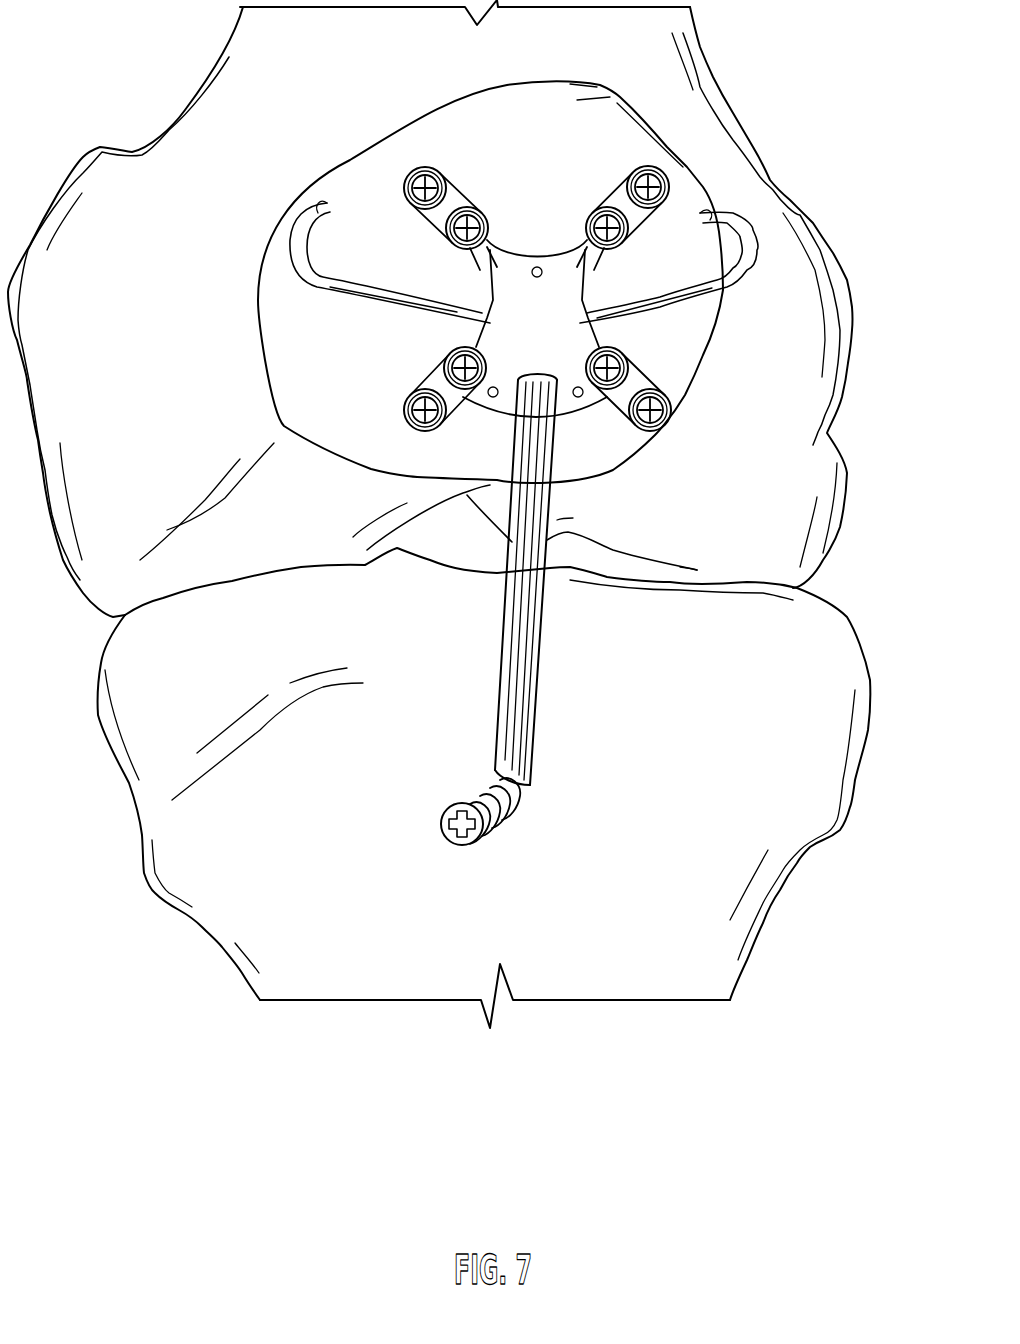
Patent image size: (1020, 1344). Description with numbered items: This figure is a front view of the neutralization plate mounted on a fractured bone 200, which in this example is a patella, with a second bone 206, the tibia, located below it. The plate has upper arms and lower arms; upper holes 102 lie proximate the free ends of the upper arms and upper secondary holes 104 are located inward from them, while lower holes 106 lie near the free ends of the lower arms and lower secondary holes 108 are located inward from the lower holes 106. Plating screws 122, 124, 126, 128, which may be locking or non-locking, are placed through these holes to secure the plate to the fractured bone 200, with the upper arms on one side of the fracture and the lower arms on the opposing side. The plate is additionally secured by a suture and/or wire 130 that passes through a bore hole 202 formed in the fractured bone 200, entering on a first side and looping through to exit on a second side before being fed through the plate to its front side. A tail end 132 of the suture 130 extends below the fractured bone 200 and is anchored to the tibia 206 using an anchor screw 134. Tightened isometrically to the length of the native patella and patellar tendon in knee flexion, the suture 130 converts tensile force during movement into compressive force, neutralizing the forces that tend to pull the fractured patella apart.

The upper holes 102 is at (403, 197).
The upper secondary holes 104 is at (455, 250).
The lower holes 106 is at (410, 395).
The lower secondary holes 108 is at (447, 350).
The plating screw 122 is at (467, 216).
The plating screw 124 is at (597, 210).
The plating screw 126 is at (468, 382).
The plating screw 128 is at (648, 432).
The suture and/or wire 130 is at (318, 280).
The tail end 132 is at (525, 640).
The anchor screw 134 is at (445, 832).
The fractured bone 200 is at (617, 120).
The bore hole 202 is at (327, 205).
The second bone 206 is at (810, 784).